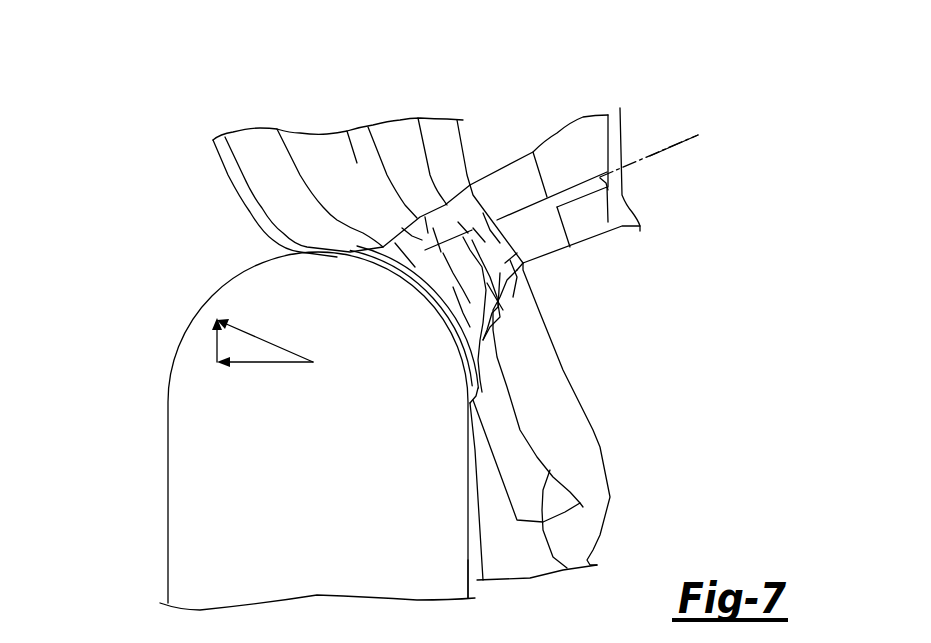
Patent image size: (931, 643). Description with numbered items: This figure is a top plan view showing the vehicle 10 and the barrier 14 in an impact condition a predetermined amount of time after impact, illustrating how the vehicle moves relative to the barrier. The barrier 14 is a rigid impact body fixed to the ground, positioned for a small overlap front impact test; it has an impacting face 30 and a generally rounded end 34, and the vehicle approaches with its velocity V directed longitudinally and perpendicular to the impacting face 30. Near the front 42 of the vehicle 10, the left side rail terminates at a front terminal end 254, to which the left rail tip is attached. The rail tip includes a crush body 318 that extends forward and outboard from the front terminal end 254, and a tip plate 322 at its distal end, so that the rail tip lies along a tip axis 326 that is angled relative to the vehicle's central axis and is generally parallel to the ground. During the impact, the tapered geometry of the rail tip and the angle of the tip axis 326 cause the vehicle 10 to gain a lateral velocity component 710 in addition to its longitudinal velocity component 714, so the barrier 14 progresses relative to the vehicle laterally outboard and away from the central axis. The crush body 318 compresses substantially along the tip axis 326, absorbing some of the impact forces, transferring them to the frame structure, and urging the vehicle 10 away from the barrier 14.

The vehicle 10 is at (623, 68).
The barrier 14 is at (168, 494).
The impacting face 30 is at (467, 572).
The rounded end 34 is at (338, 257).
The front 42 is at (227, 172).
The front terminal end 254 is at (610, 223).
The crush body 318 is at (520, 268).
The tip plate 322 is at (477, 395).
The tip axis 326 is at (680, 143).
The lateral velocity component 710 is at (213, 343).
The longitudinal velocity component 714 is at (282, 363).
The velocity V is at (255, 333).